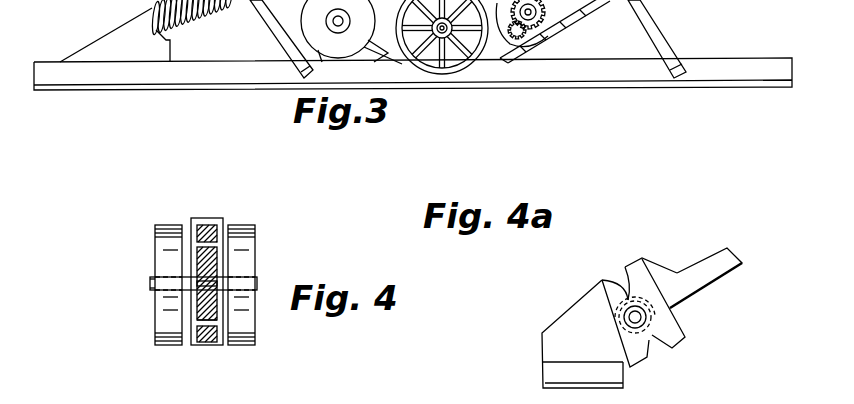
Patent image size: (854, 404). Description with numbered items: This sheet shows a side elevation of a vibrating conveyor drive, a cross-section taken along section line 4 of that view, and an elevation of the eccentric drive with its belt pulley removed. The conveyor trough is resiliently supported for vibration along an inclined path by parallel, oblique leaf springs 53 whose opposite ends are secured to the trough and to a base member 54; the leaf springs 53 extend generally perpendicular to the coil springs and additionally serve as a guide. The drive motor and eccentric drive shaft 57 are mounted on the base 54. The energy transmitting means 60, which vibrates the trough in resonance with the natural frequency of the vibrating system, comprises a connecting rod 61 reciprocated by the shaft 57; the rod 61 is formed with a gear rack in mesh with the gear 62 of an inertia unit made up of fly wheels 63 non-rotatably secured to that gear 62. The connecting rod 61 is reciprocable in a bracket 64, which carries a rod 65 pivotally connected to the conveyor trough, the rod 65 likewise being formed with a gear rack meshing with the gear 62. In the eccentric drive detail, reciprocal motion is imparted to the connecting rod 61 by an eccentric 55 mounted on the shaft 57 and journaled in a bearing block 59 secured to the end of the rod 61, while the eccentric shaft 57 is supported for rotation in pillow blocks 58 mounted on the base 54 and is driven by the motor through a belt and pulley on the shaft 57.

In FIG. 3, the section line 4— 4 is at (549, 44).
In FIG. 3, the leaf springs 53 is at (266, 18).
In FIG. 3, the base member 54 is at (609, 80).
In FIG. 4A, the base member 54 is at (572, 376).
In FIG. 4A, the eccentric 55 is at (660, 276).
In FIG. 4A, the eccentric drive shaft 57 is at (640, 330).
In FIG. 3, the pillow blocks 58 is at (447, 64).
In FIG. 4A, the pillow blocks 58 is at (600, 296).
In FIG. 4A, the bearing block 59 is at (668, 327).
In FIG. 4, the energy transmitting means 60 is at (205, 276).
In FIG. 4, the connecting rod 61 is at (203, 225).
In FIG. 4A, the connecting rod 61 is at (728, 254).
In FIG. 3, the gear 62 is at (505, 40).
In FIG. 4, the gear 62 is at (197, 260).
In FIG. 4, the fly wheels 63 is at (162, 251).
In FIG. 3, the bracket 64 is at (582, 4).
In FIG. 3, the rod 65 is at (600, 2).
In FIG. 4, the rod 65 is at (207, 345).